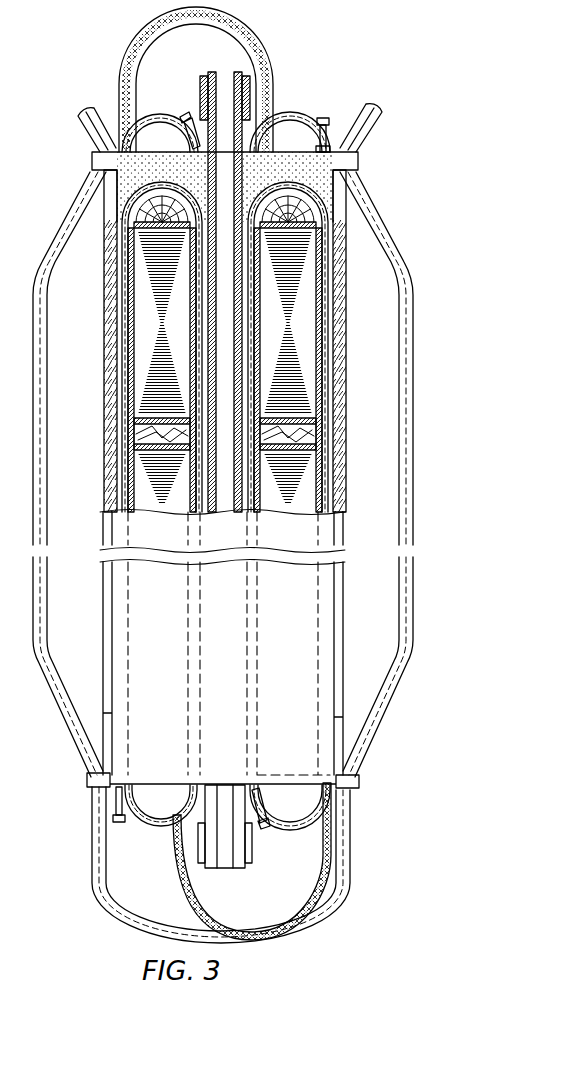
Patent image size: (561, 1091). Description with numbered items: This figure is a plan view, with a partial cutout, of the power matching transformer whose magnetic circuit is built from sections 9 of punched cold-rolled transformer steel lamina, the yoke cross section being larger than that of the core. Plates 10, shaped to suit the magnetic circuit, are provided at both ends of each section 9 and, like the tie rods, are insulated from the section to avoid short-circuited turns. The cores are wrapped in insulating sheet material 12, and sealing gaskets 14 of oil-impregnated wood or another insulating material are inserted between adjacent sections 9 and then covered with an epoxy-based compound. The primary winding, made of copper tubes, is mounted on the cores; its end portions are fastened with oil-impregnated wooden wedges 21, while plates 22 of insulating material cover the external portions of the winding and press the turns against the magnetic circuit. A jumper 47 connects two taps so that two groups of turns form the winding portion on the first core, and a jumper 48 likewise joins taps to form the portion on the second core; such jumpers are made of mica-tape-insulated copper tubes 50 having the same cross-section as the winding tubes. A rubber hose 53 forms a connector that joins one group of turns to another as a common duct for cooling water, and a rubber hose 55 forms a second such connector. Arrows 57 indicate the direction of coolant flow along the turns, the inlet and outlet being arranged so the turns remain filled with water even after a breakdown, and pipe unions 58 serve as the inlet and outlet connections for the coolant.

The section of the magnetic circuit 9 is at (330, 340).
The plates 10 is at (290, 350).
The insulating sheet material 12 is at (318, 260).
The sealing gaskets 14 is at (310, 437).
The oil-impregnated wooden wedges 21 is at (140, 208).
The plates of insulation material 22 is at (340, 377).
The jumper 47 is at (45, 533).
The jumper 48 is at (403, 507).
The mica-tape-insulated copper tubes 50 is at (155, 115).
The rubber hose 53 is at (302, 923).
The rubber hose 55 is at (257, 43).
The arrows 57 is at (122, 827).
The pipe unions 58 is at (328, 137).